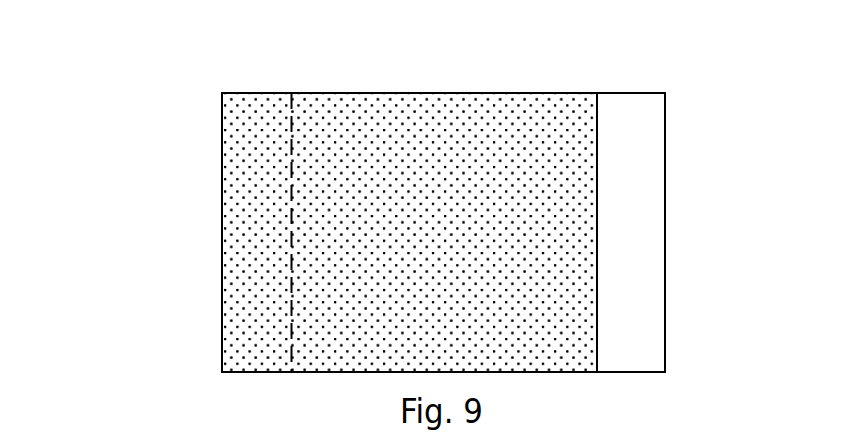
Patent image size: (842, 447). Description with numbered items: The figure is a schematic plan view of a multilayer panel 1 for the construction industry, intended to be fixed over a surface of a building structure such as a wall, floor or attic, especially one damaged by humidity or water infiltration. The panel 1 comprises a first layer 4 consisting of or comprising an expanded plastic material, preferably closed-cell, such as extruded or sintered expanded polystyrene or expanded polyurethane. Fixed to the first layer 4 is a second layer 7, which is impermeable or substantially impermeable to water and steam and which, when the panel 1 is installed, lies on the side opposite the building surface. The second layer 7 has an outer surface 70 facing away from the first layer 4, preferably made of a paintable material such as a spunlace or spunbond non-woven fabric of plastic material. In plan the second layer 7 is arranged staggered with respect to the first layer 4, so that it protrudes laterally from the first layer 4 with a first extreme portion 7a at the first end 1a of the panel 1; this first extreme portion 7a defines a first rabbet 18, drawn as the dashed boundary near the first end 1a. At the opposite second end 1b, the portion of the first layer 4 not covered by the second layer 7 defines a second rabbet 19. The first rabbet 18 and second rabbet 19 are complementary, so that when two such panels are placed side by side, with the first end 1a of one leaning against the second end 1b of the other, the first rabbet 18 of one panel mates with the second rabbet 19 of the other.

The multilayer panel 1 is at (720, 90).
The first end 1a is at (222, 323).
The second end 1b is at (665, 352).
The first layer 4 is at (643, 293).
The second layer 7 is at (350, 135).
The first extreme portion 7a is at (245, 173).
The first rabbet 18 is at (262, 257).
The second rabbet 19 is at (653, 210).
The outer surface 70 is at (413, 123).